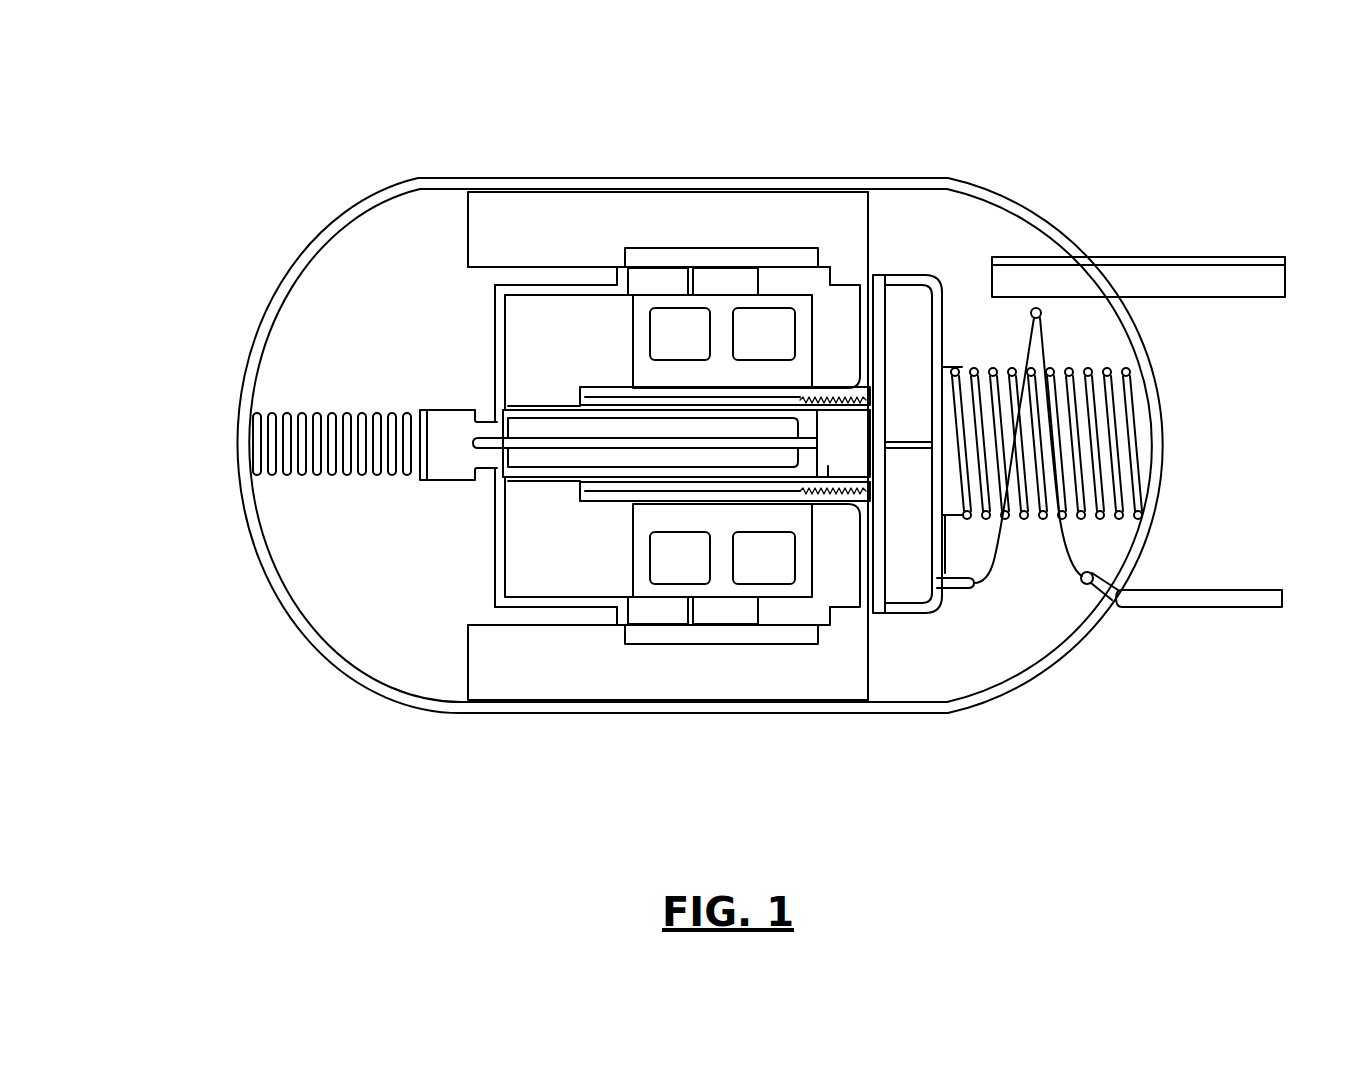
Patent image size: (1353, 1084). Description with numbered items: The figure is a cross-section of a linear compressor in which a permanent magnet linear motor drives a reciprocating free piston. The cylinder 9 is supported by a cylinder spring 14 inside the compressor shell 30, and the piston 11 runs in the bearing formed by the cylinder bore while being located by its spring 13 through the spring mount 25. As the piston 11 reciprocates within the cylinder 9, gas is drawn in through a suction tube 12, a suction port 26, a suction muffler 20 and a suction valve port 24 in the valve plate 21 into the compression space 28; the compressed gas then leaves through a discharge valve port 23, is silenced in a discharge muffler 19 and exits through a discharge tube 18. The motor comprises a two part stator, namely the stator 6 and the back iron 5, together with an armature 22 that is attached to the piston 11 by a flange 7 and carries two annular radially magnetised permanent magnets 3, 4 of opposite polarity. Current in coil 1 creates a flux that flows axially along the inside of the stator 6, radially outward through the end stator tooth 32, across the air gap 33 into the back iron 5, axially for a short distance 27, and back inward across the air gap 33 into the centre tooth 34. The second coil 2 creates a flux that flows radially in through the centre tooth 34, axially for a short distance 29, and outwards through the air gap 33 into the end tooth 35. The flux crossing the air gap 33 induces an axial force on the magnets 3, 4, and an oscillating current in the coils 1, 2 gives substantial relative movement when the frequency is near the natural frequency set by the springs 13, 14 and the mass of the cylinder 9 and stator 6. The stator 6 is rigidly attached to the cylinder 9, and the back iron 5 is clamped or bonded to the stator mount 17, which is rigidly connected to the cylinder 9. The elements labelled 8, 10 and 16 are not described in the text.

The coil 1 is at (685, 323).
The second coil 2 is at (760, 323).
The permanent magnet 3 is at (653, 277).
The permanent magnet 4 is at (735, 275).
The back iron 5 is at (625, 247).
The stator 6 is at (630, 317).
The flange 7 is at (498, 608).
The bracket 8 is at (837, 400).
The cylinder 9 is at (833, 400).
The upper contact 10 is at (882, 373).
The piston 11 is at (502, 485).
The suction tube 12 is at (1155, 257).
The spring 13 is at (323, 475).
The cylinder spring 14 is at (1027, 523).
The hub 16 is at (875, 497).
The stator mount 17 is at (523, 188).
The discharge tube 18 is at (987, 583).
The discharge muffler 19 is at (923, 603).
The suction muffler 20 is at (918, 302).
The valve plate 21 is at (880, 617).
The armature 22 is at (660, 608).
The discharge valve port 23 is at (888, 467).
The suction valve port 24 is at (515, 432).
The spring mount 25 is at (443, 407).
The suction port 26 is at (950, 305).
The short distance 27 is at (657, 608).
The compression space 28 is at (828, 465).
The short distance 29 is at (733, 632).
The compressor shell 30 is at (922, 178).
The end stator tooth 32 is at (633, 540).
The air gap 33 is at (807, 613).
The centre tooth 34 is at (708, 600).
The end tooth 35 is at (783, 588).